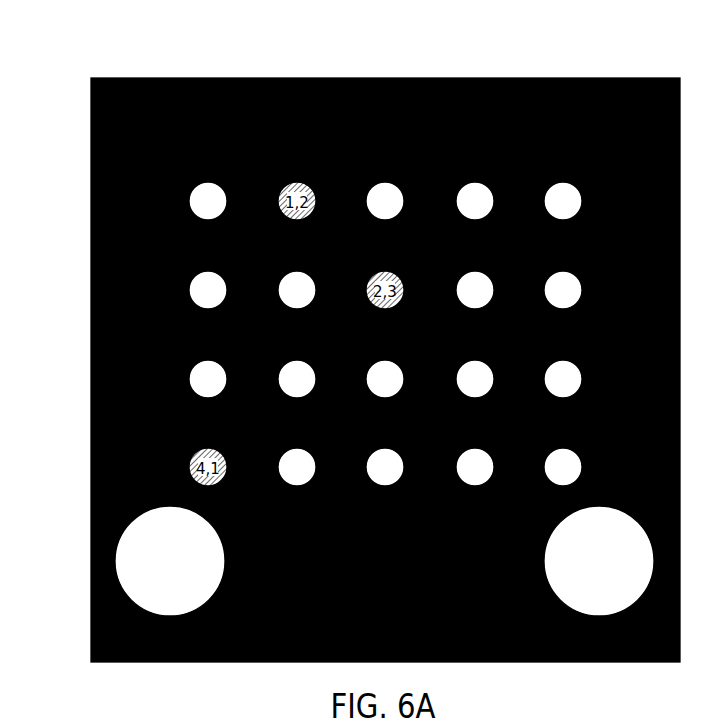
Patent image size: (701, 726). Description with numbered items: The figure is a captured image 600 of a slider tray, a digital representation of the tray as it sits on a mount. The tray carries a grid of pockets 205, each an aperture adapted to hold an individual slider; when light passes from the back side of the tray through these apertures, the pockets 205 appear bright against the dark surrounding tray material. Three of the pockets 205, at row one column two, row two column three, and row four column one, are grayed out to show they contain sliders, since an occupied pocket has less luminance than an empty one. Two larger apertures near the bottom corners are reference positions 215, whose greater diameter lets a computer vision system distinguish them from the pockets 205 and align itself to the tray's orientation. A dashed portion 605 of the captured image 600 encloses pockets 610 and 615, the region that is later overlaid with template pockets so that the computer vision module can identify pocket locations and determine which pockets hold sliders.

The captured image 600 is at (503, 70).
The pocket 205 is at (183, 193).
The reference position 215 is at (133, 551).
The pocket of the captured image 610 is at (282, 148).
The pocket of the captured image 615 is at (377, 186).
The portion of the captured image 605 is at (422, 146).